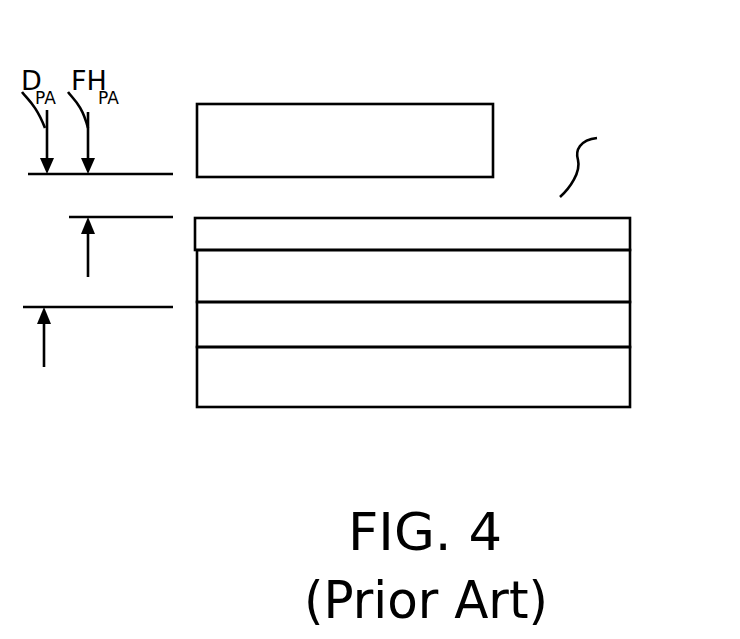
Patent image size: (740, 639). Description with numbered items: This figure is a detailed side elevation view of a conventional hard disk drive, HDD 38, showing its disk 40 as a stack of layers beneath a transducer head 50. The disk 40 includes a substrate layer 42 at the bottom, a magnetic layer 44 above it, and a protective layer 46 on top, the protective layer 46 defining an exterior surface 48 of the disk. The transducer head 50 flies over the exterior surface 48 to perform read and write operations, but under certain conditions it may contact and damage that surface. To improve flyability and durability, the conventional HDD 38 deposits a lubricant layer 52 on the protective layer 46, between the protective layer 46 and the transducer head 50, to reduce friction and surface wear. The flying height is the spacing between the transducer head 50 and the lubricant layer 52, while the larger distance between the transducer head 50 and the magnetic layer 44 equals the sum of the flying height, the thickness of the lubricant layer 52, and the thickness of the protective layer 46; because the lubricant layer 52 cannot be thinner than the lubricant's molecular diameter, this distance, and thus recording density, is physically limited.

The conventional HDD 38 is at (530, 83).
The disk 40 is at (449, 241).
The substrate layer 42 is at (617, 370).
The magnetic layer 44 is at (617, 315).
The protective layer 46 is at (617, 270).
The exterior surface 48 is at (507, 217).
The transducer head 50 is at (197, 130).
The lubricant layer 52 is at (597, 156).